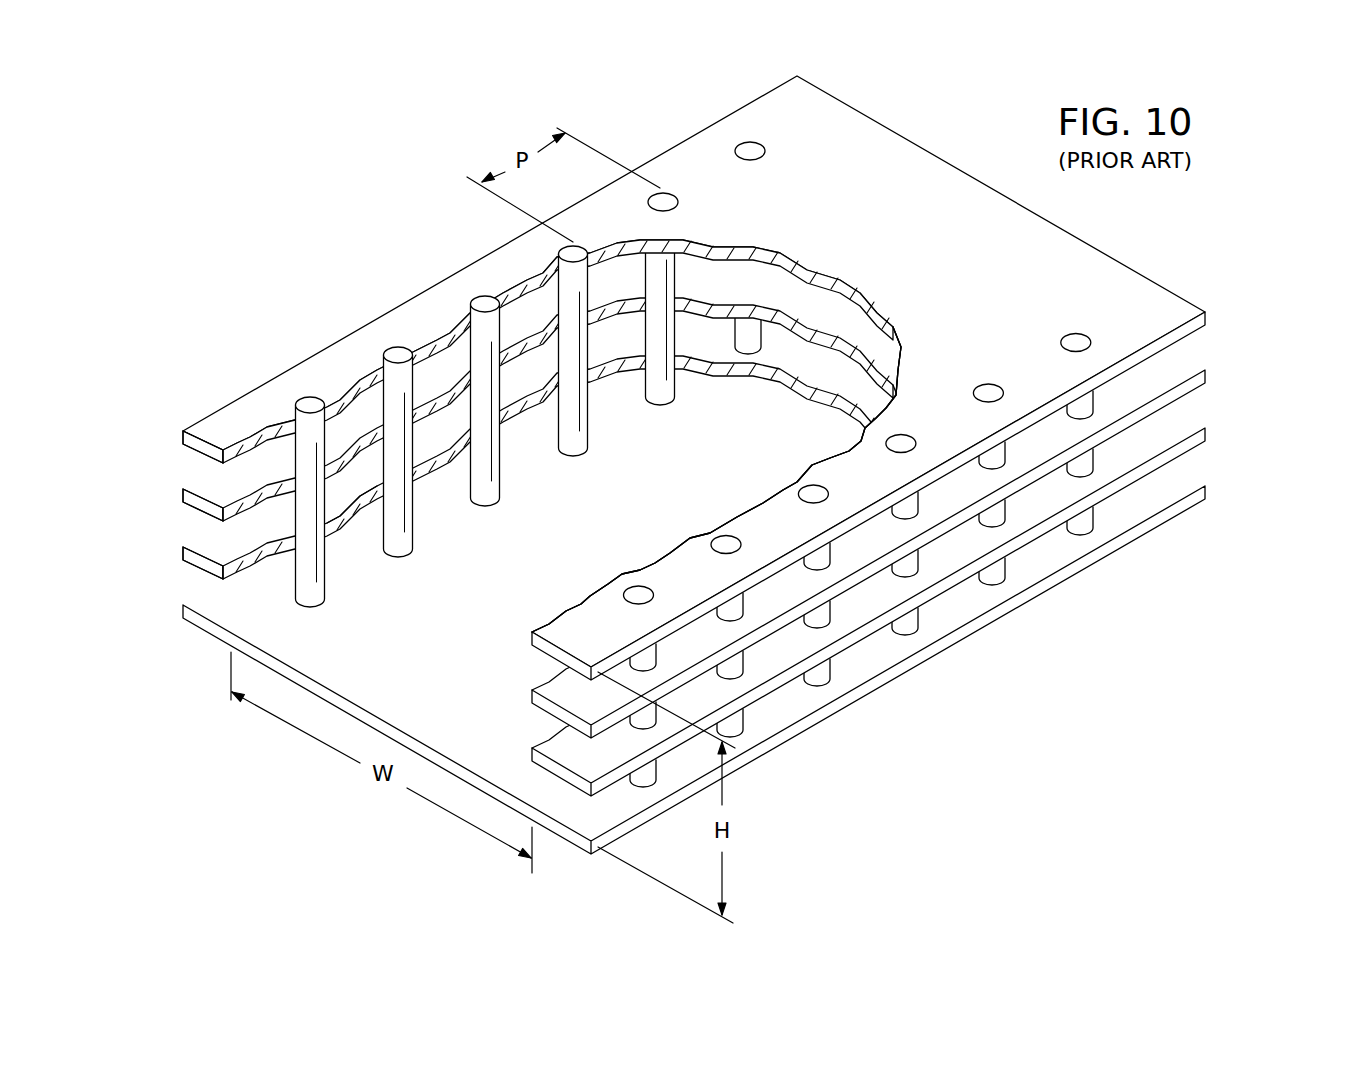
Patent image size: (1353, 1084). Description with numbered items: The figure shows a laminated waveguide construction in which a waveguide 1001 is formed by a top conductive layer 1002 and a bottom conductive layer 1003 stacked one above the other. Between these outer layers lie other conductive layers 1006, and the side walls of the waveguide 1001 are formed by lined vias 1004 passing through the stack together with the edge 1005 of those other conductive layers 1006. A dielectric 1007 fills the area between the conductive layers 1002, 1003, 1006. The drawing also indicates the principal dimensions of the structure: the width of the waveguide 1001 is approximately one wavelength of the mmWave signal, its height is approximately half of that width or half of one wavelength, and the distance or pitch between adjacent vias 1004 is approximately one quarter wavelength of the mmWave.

The waveguide 1001 is at (699, 465).
The top conductive layer 1002 is at (893, 258).
The bottom conductive layer 1003 is at (1183, 491).
The lined vias 1004 is at (993, 388).
The edge 1005 is at (699, 528).
The other conductive layers 1006 is at (1183, 372).
The dielectric 1007 is at (184, 459).